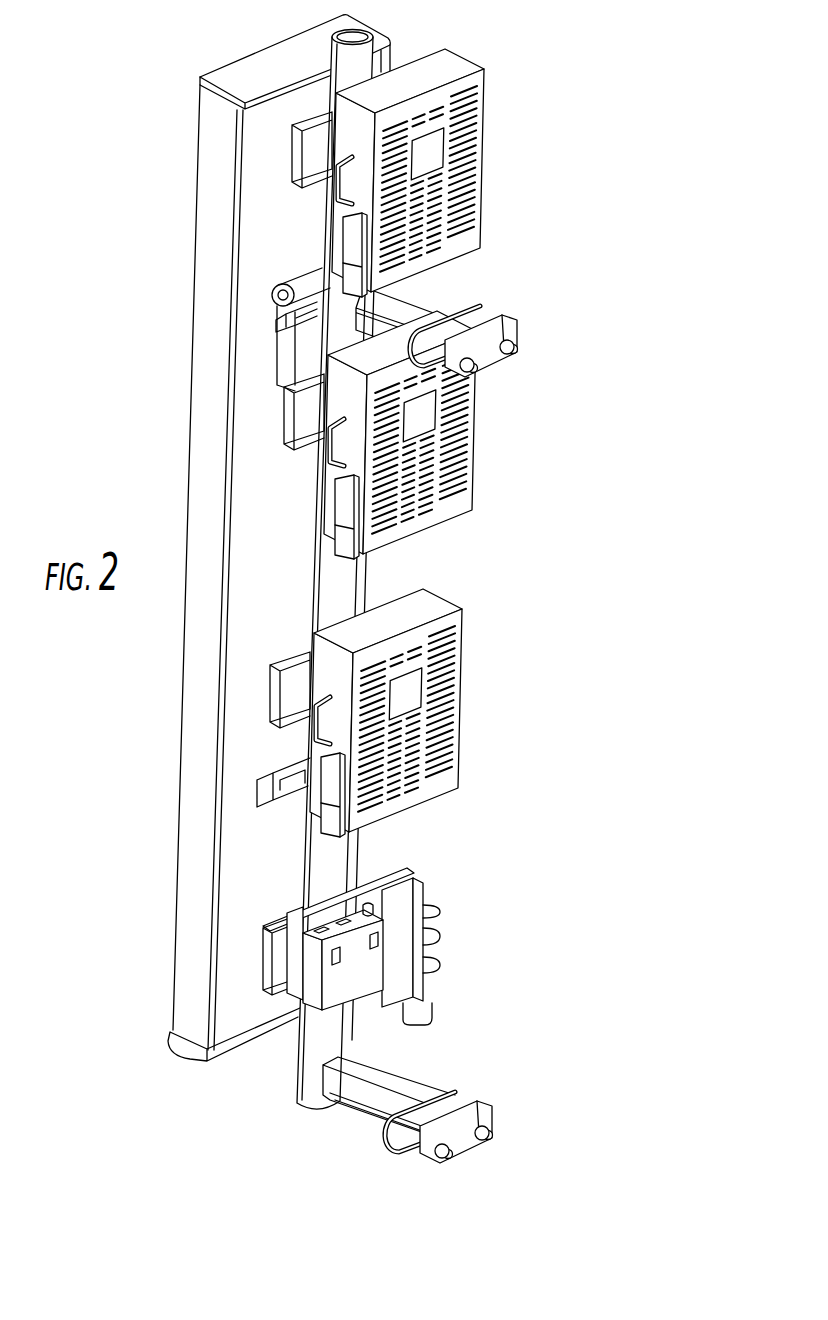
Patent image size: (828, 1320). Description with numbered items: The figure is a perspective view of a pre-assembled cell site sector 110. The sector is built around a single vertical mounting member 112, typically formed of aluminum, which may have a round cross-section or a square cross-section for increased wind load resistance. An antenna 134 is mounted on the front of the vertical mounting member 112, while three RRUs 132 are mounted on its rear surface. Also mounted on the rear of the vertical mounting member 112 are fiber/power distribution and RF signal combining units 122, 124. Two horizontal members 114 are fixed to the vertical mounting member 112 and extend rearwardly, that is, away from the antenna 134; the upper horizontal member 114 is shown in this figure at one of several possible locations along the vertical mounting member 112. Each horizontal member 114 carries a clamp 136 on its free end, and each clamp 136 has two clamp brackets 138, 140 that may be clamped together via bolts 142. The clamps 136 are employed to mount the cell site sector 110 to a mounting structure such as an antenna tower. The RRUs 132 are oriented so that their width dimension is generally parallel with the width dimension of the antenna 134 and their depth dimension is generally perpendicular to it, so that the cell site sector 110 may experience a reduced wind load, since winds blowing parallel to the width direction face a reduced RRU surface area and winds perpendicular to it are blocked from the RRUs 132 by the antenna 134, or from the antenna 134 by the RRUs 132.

The cell site sector 110 is at (392, 591).
The vertical mounting member 112 is at (310, 1078).
The horizontal member 114 is at (427, 302).
The fiber/power distribution and RF signal combining unit 122 is at (341, 984).
The fiber/power distribution and RF signal combining unit 124 is at (424, 988).
The RRU 132 is at (440, 794).
The antenna 134 is at (188, 912).
The clamp 136 is at (508, 712).
The clamp bracket 138 is at (480, 301).
The clamp bracket 140 is at (490, 358).
The bolt 142 is at (458, 378).